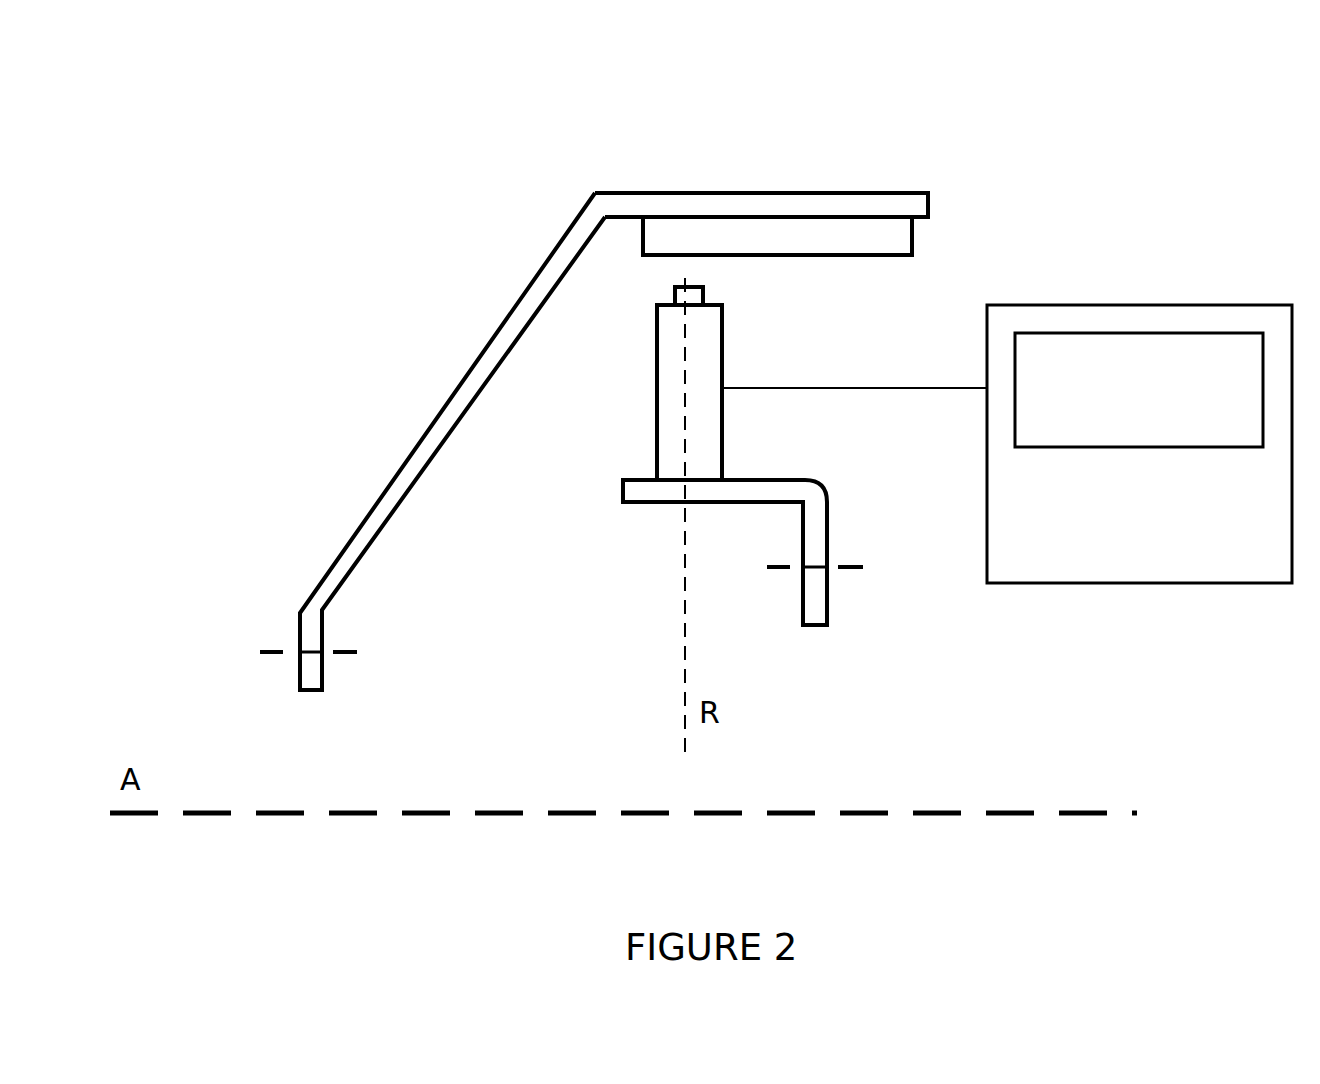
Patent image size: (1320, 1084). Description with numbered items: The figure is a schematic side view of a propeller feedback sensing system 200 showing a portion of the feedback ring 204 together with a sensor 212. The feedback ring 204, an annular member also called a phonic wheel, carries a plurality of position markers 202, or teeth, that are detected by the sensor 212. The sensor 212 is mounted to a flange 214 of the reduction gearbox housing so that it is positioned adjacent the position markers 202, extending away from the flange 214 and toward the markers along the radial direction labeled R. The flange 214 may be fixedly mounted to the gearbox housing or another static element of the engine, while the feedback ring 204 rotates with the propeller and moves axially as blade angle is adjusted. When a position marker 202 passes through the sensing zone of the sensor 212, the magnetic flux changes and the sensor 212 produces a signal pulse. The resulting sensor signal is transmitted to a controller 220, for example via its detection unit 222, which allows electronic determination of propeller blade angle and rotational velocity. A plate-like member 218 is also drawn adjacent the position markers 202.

The system 200 is at (342, 166).
The position markers 202 is at (753, 232).
The feedback ring 204 is at (320, 578).
The sensor 212 is at (657, 372).
The flange 214 is at (623, 495).
The mounting plate 218 is at (917, 222).
The controller 220 is at (1139, 444).
The detection unit 222 is at (1139, 390).